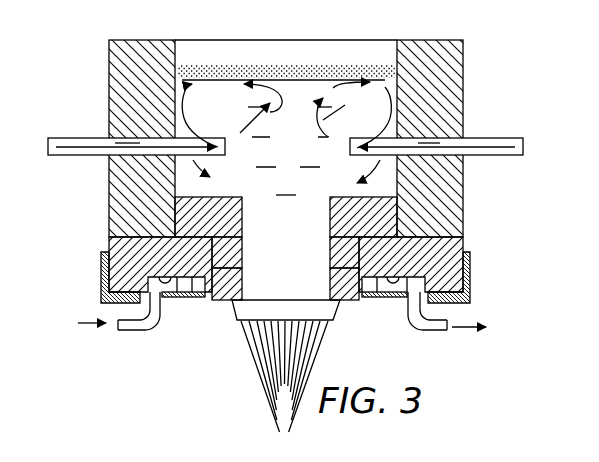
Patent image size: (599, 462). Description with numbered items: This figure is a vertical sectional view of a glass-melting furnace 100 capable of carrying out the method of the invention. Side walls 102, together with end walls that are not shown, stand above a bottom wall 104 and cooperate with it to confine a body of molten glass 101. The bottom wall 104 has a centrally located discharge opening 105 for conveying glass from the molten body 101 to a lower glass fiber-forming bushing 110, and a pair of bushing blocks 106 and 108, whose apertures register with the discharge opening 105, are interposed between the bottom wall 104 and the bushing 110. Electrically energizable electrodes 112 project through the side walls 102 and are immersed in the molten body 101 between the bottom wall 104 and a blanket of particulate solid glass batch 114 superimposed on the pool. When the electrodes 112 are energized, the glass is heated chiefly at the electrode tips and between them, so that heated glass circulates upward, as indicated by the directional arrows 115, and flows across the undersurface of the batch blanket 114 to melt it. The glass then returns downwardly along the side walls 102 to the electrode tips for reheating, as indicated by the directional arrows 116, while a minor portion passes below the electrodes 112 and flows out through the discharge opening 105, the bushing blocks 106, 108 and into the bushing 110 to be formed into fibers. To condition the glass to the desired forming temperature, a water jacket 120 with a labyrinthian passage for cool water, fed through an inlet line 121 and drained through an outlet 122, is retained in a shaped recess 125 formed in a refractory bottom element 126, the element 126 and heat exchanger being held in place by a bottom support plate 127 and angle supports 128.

The furnace 100 is at (460, 30).
The body of molten glass 101 is at (303, 135).
The side walls 102 is at (118, 75).
The bottom wall 104 is at (250, 168).
The discharge opening 105 is at (330, 200).
The bushing block 106 is at (238, 252).
The bushing block 108 is at (240, 285).
The glass fiber-forming bushing 110 is at (236, 318).
The electrodes 112 is at (100, 144).
The batch blanket 114 is at (300, 66).
The directional arrows 115 is at (250, 113).
The directional arrows 116 is at (200, 112).
The water jacket 120 is at (185, 300).
The inlet line 121 is at (130, 327).
The outlet 122 is at (437, 327).
The recess 125 is at (393, 280).
The refractory bottom element 126 is at (125, 248).
The bottom support plate 127 is at (175, 300).
The angle iron supports 128 is at (103, 270).